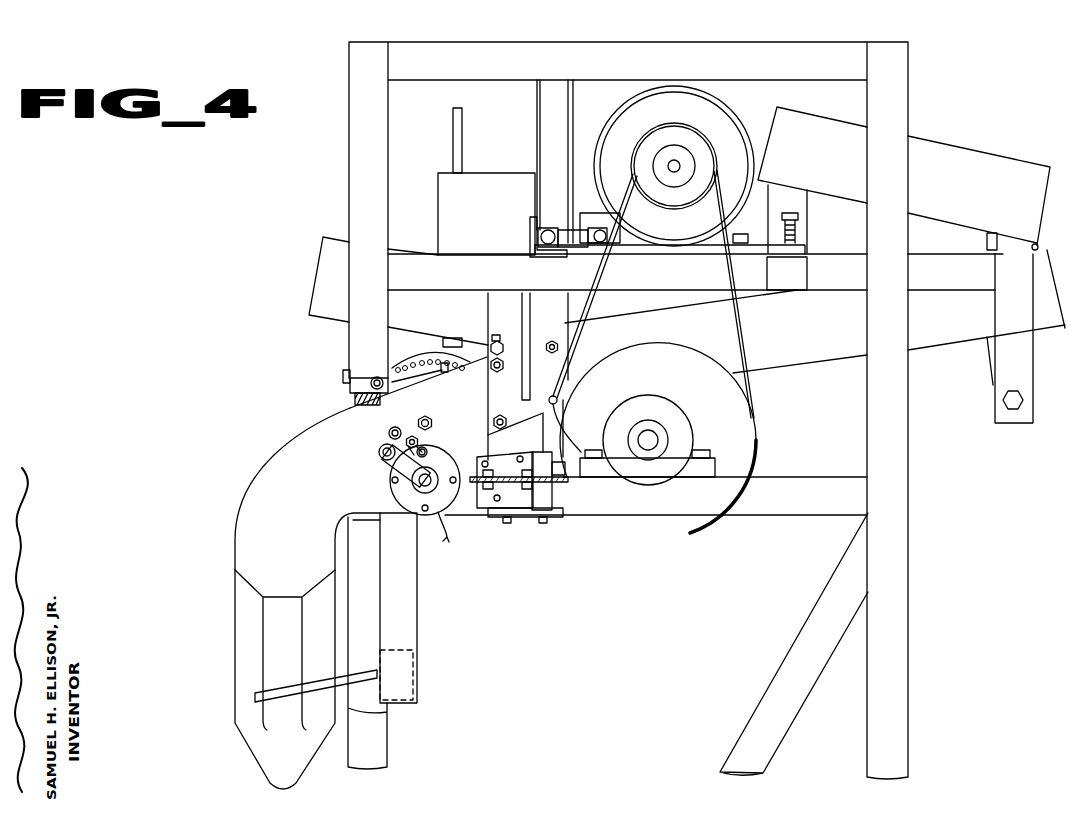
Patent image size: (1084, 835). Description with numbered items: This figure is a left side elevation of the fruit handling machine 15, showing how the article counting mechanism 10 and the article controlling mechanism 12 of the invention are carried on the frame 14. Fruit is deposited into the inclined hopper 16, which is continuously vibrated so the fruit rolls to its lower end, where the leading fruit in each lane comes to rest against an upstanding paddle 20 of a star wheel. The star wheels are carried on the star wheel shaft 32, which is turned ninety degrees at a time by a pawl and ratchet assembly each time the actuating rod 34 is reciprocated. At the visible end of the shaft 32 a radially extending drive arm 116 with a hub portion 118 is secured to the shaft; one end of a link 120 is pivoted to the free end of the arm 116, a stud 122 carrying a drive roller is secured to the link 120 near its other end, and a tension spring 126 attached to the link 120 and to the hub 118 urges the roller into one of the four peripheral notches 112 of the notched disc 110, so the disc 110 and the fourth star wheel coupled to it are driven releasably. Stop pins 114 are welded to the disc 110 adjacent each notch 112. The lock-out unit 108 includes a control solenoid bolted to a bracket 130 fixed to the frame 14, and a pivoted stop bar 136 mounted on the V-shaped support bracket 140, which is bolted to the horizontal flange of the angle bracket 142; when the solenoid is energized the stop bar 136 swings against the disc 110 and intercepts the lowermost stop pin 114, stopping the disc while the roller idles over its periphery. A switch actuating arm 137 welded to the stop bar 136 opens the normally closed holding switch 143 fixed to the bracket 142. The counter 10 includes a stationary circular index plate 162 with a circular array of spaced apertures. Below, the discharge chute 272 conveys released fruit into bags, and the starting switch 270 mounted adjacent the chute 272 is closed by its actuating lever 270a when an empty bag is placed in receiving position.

The frame 14 is at (718, 42).
The actuating rod 34 is at (462, 128).
The fruit handling machine 15 is at (334, 207).
The inclined hopper 16 is at (836, 333).
The article counting mechanism 10 is at (416, 345).
The index plate 162 is at (410, 360).
The article controlling mechanism 12 is at (259, 448).
The stud 122 is at (412, 438).
The stop pin 114 is at (428, 442).
The tension spring 126 is at (427, 450).
The peripheral notch 112 is at (426, 456).
The link 120 is at (389, 432).
The drive arm 116 is at (400, 465).
The notched disc 110 is at (395, 472).
The star wheel shaft 32 is at (420, 487).
The hub portion 118 is at (423, 492).
The paddle 20 is at (446, 548).
The lock-out unit 108 is at (467, 515).
The holding switch 143 is at (556, 403).
The switch actuating arm 137 is at (561, 440).
The bracket 130 is at (503, 455).
The stop bar 136 is at (562, 468).
The angle bracket 142 is at (566, 482).
The support bracket 140 is at (566, 500).
The discharge chute 272 is at (252, 640).
The actuating lever 270a is at (282, 688).
The starting switch 270 is at (397, 650).